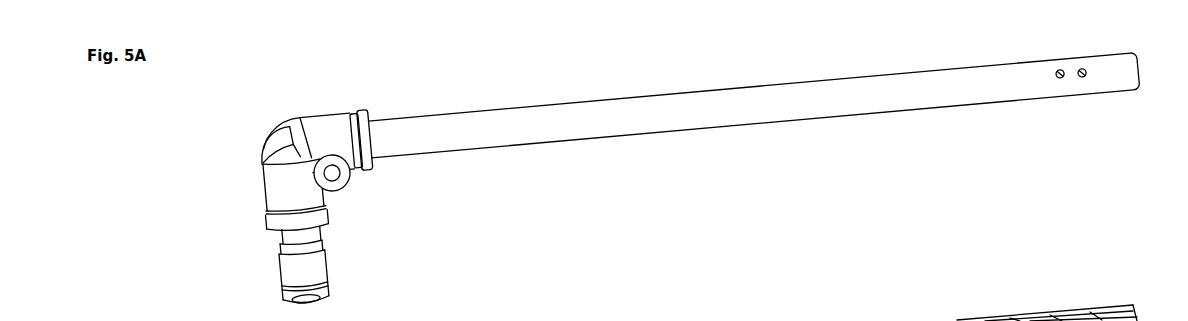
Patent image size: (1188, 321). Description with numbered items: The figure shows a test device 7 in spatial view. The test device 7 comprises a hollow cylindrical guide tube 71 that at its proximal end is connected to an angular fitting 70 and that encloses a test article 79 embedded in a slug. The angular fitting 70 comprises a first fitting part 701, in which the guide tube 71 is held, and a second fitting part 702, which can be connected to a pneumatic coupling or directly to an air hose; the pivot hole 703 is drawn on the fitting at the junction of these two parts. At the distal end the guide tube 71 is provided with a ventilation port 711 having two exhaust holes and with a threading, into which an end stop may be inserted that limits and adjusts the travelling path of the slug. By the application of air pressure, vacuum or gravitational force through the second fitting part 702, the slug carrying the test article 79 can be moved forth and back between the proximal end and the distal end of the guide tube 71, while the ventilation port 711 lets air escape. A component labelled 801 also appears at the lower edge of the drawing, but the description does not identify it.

The test device 7 is at (215, 132).
The fitting 70 is at (282, 190).
The first fitting part 701 is at (332, 130).
The second fitting part 702 is at (297, 267).
The pivot hole 703 is at (342, 183).
The guide tube 71 is at (758, 108).
The ventilation port 711 is at (1085, 77).
The test article 79 is at (1055, 320).
The water inlet pipe 801 is at (351, 316).